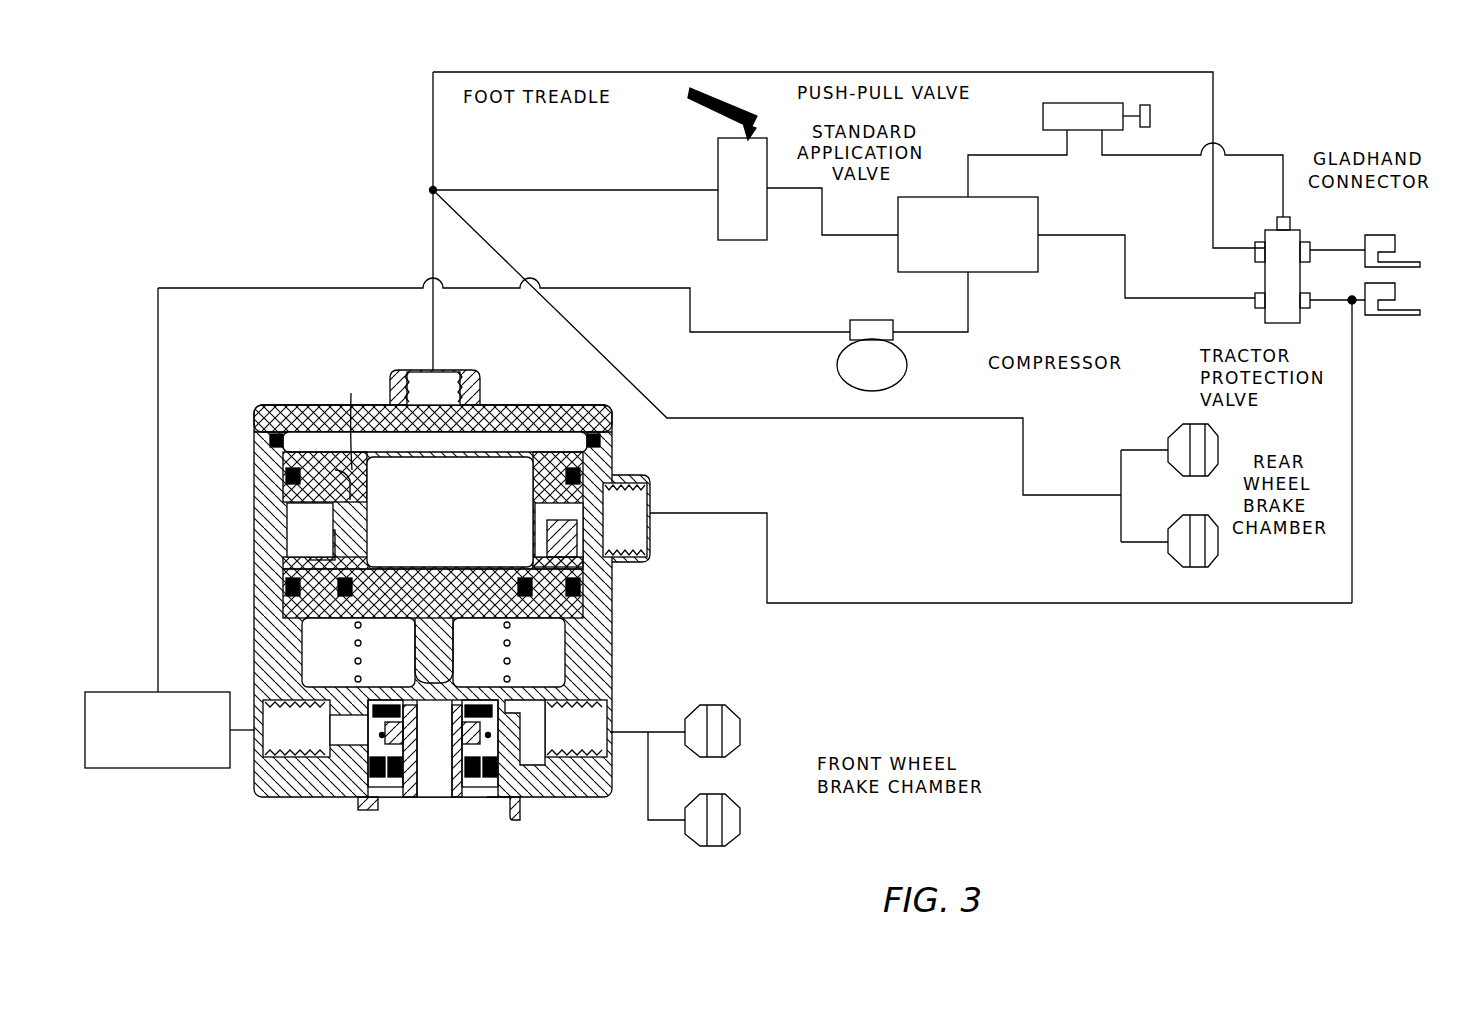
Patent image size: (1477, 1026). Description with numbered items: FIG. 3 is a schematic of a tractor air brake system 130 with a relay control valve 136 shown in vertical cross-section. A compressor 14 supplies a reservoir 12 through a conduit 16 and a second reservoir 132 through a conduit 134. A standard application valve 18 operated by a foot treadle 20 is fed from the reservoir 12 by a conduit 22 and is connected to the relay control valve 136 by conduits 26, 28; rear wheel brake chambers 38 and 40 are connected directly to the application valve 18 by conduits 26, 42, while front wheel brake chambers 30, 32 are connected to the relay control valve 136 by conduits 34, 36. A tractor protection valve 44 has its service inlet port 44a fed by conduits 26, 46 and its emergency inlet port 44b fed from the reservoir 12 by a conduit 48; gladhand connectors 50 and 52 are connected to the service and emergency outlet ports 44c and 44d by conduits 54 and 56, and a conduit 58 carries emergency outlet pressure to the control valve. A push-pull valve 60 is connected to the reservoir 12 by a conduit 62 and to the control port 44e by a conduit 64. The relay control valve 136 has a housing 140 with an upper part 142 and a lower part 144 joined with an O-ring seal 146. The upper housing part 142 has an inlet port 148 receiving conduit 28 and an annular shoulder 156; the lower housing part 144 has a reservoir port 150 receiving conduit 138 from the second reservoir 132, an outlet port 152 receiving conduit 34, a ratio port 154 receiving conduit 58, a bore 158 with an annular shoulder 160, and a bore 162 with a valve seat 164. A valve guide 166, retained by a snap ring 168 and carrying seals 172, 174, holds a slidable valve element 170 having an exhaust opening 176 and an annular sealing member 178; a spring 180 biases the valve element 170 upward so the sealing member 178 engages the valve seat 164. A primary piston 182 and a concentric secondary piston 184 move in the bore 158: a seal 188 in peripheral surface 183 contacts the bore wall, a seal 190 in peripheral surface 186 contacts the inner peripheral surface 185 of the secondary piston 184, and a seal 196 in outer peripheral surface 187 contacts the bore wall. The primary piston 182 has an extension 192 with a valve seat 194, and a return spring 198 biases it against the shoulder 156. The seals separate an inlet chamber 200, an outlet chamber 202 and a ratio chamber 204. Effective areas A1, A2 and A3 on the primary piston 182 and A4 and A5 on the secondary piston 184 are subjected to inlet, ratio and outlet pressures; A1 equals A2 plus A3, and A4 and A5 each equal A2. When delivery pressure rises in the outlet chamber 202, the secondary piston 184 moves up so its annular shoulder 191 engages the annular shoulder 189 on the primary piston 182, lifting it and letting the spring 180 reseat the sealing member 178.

The reservoir 12 is at (895, 260).
The compressor 14 is at (908, 362).
The conduit 16 is at (970, 320).
The standard application valve 18 is at (768, 190).
The foot treadle 20 is at (688, 96).
The conduit 22 is at (824, 233).
The conduit 26 is at (518, 190).
The conduit 28 is at (430, 250).
The front wheel brake chamber 30 is at (740, 732).
The front wheel brake chamber 32 is at (740, 820).
The conduit 34 is at (662, 730).
The conduit 36 is at (650, 782).
The rear wheel brake chamber 38 is at (1218, 450).
The rear wheel brake chamber 40 is at (1218, 545).
The conduit 42 is at (818, 420).
The tractor protection valve 44 is at (1262, 280).
The service inlet port 44a is at (1252, 252).
The emergency inlet port 44b is at (1255, 305).
The service outlet port 44c is at (1312, 248).
The emergency outlet port 44d is at (1312, 308).
The control port 44e is at (1275, 215).
The conduit 46 is at (885, 72).
The conduit 48 is at (1127, 280).
The gladhand connector 50 is at (1420, 262).
The gladhand connector 52 is at (1420, 314).
The conduit 54 is at (1350, 250).
The conduit 56 is at (1356, 305).
The conduit 58 is at (1210, 605).
The push-pull valve 60 is at (1048, 103).
The conduit 62 is at (1040, 160).
The conduit 64 is at (1285, 168).
The tractor air brake system 130 is at (345, 245).
The second reservoir 132 is at (100, 692).
The conduit 134 is at (156, 460).
The relay control valve 136 is at (292, 405).
The conduit 138 is at (242, 718).
The housing 140 is at (648, 485).
The upper housing part 142 is at (582, 405).
The lower housing part 144 is at (610, 578).
The O-ring seal 146 is at (600, 442).
The inlet port 148 is at (412, 374).
The reservoir port 150 is at (258, 782).
The outlet port 152 is at (575, 755).
The ratio port 154 is at (645, 528).
The annular shoulder 156 is at (270, 440).
The bore 158 is at (283, 492).
The annular shoulder 160 is at (283, 600).
The bore 162 is at (340, 740).
The valve seat 164 is at (482, 717).
The valve guide 166 is at (385, 778).
The snap ring 168 is at (362, 812).
The valve element 170 is at (462, 790).
The seal 172 is at (478, 778).
The seal 174 is at (505, 805).
The exhaust opening 176 is at (425, 755).
The annular sealing member 178 is at (368, 720).
The spring 180 is at (515, 745).
The primary piston 182 is at (284, 475).
The peripheral surface 183 is at (612, 460).
The secondary piston 184 is at (285, 575).
The inner peripheral surface 185 is at (545, 560).
The peripheral surface 186 is at (360, 510).
The outer peripheral surface 187 is at (612, 567).
The seal 188 is at (340, 470).
The annular shoulder 189 is at (533, 492).
The seal 190 is at (350, 548).
The annular shoulder 191 is at (540, 522).
The extension 192 is at (440, 630).
The valve seat 194 is at (415, 685).
The seal 196 is at (284, 587).
The return spring 198 is at (570, 650).
The inlet chamber 200 is at (450, 509).
The outlet chamber 202 is at (433, 652).
The ratio chamber 204 is at (559, 529).
The effective area A1 is at (351, 420).
The effective area A2 is at (290, 500).
The effective area A3 is at (300, 640).
The effective area A4 is at (290, 530).
The effective area A5 is at (570, 610).